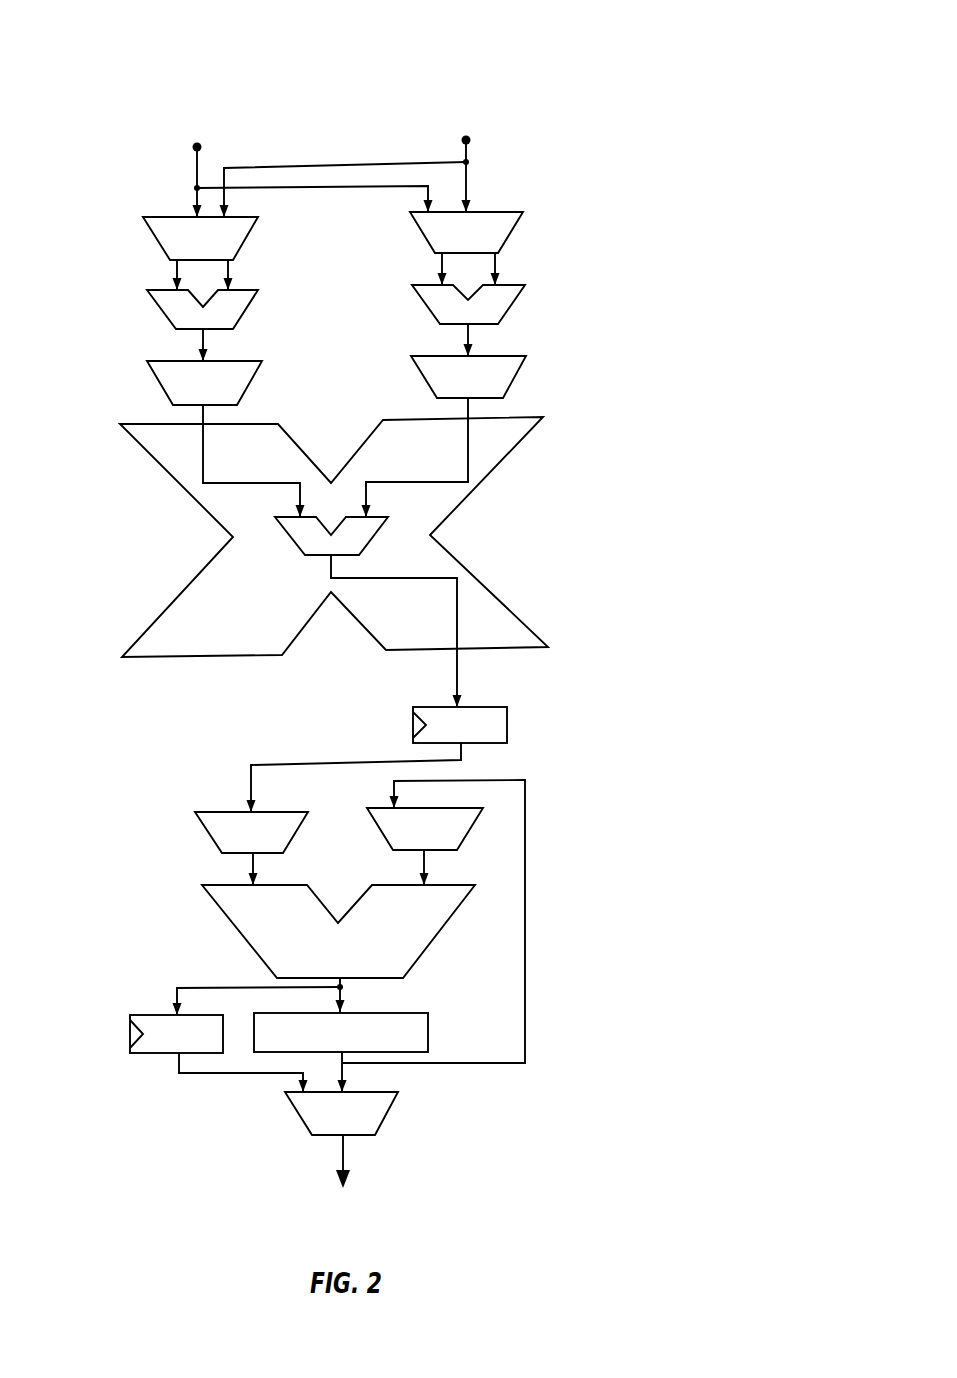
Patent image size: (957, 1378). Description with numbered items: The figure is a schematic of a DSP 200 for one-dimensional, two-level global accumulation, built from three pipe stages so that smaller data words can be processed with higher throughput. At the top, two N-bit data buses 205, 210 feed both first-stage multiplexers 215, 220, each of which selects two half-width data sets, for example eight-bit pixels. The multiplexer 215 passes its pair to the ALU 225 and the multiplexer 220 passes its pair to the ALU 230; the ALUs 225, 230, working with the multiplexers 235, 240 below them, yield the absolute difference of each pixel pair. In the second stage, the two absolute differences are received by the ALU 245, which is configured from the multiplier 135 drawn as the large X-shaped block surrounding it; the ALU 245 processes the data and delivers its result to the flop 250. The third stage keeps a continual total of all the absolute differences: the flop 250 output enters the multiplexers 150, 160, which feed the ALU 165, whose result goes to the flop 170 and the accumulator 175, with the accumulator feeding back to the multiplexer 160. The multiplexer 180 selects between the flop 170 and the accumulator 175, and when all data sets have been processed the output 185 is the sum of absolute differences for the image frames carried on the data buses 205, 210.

The DSP 200 is at (460, 40).
The N-bit data bus 205 is at (184, 132).
The N-bit data bus 210 is at (474, 120).
The multiplexer 215 is at (162, 240).
The multiplexer 220 is at (515, 230).
The arithmetic logic unit 225 is at (160, 310).
The arithmetic logic unit 230 is at (513, 305).
The multiplexer 235 is at (155, 380).
The multiplexer 240 is at (518, 377).
The multiplier 135 is at (172, 480).
The arithmetic logic unit 245 is at (295, 547).
The flop 250 is at (507, 725).
The multiplexer 150 is at (200, 832).
The multiplexer 160 is at (375, 828).
The arithmetic logic unit 165 is at (235, 932).
The flop 170 is at (130, 1033).
The accumulator 175 is at (428, 1028).
The multiplexer 180 is at (298, 1117).
The output 185 is at (338, 1155).